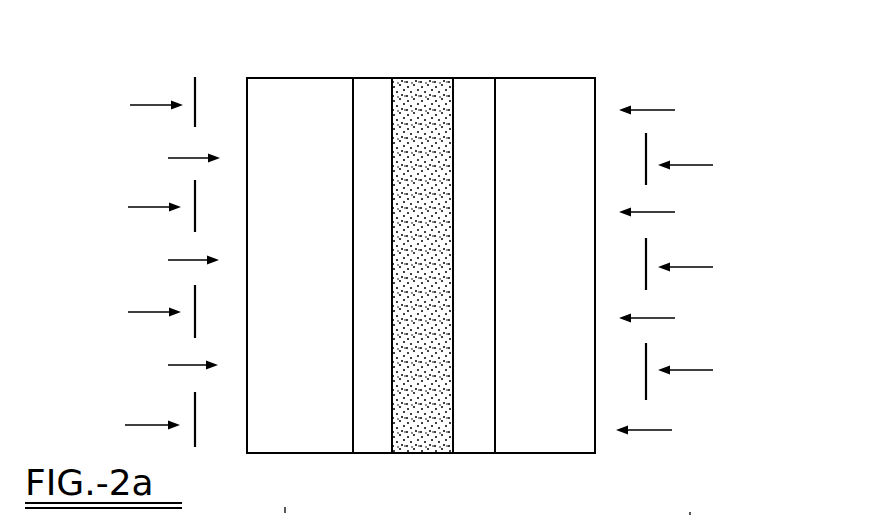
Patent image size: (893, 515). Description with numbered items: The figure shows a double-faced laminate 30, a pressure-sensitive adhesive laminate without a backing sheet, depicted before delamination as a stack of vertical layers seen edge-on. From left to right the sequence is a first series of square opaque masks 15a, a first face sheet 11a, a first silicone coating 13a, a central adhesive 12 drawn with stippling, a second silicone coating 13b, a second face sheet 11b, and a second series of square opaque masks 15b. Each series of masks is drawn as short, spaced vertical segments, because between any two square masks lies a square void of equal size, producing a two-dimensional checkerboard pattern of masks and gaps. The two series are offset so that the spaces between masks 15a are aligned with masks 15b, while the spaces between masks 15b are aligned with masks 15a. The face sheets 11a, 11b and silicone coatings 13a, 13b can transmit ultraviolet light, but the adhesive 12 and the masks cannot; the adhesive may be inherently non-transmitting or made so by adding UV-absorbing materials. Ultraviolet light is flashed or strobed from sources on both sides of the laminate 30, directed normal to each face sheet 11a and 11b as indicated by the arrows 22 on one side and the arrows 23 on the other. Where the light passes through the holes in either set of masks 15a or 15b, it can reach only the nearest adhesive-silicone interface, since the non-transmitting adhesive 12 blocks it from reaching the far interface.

The first face sheet 11a is at (300, 85).
The second face sheet 11b is at (548, 88).
The adhesive 12 is at (430, 85).
The first silicone coating 13a is at (373, 85).
The second silicone coating 13b is at (476, 85).
The first series of square opaque masks 15a is at (195, 77).
The second series of square opaque masks 15b is at (648, 148).
The arrows indicating UV rays 22 is at (143, 95).
The arrows indicating UV rays 23 is at (662, 98).
The double-faced laminate 30 is at (612, 63).